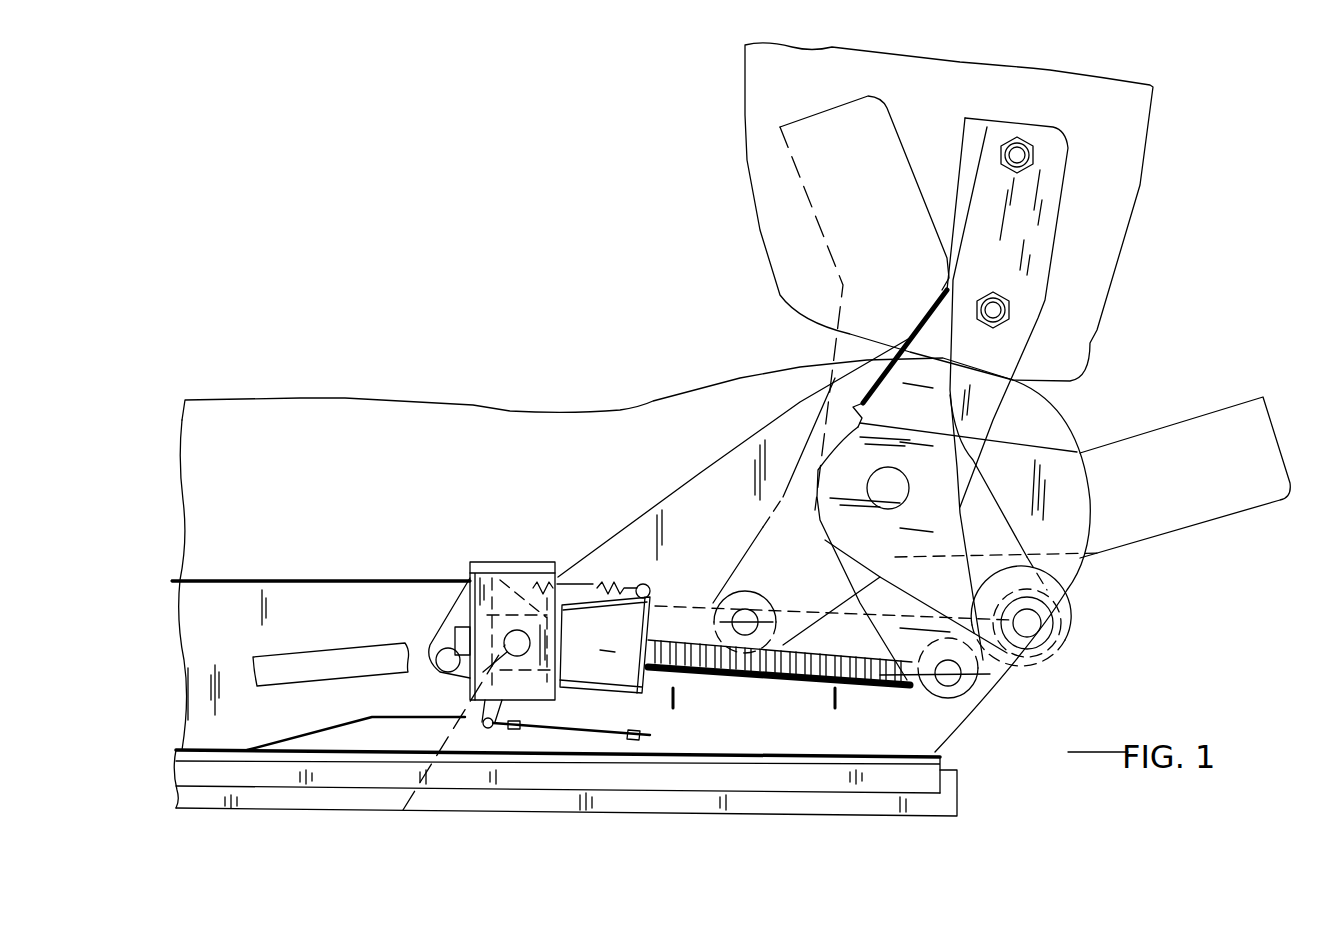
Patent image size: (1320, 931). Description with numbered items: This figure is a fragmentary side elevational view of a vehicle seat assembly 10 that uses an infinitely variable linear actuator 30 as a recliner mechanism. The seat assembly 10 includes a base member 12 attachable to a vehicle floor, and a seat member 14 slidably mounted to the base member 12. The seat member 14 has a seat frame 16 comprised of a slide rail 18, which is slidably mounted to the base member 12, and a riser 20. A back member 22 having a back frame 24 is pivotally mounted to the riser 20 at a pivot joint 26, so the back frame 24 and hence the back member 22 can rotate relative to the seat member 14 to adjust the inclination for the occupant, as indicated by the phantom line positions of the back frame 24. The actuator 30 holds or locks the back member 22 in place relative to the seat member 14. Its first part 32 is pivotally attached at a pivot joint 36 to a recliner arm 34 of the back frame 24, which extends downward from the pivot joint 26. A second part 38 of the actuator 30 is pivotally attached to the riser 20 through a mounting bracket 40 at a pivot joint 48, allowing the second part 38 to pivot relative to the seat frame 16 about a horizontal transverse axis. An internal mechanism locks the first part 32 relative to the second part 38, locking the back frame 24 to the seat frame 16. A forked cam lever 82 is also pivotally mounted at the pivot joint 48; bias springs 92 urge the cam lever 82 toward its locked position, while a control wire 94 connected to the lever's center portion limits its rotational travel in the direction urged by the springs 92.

The seat assembly 10 is at (626, 298).
The base member 12 is at (700, 800).
The seat member 14 is at (407, 398).
The seat frame 16 is at (300, 583).
The slide rail 18 is at (942, 757).
The riser 20 is at (392, 580).
The back member 22 is at (1138, 178).
The back frame 24 is at (797, 120).
The pivot joint 26 is at (866, 506).
The infinitely variable linear actuator 30 is at (632, 694).
The first part 32 is at (803, 682).
The recliner arm 34 is at (1063, 580).
The pivot joint 36 is at (990, 676).
The second part 38 is at (652, 608).
The mounting bracket 40 is at (500, 562).
The pivot joint 48 is at (470, 678).
The cam lever 82 is at (436, 749).
The bias springs 92 is at (620, 627).
The control wire 94 is at (634, 740).